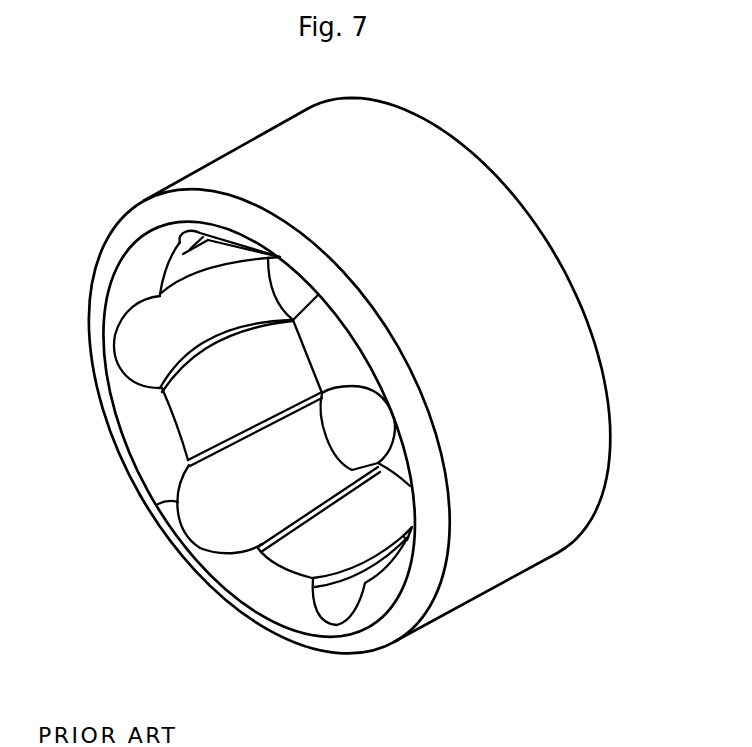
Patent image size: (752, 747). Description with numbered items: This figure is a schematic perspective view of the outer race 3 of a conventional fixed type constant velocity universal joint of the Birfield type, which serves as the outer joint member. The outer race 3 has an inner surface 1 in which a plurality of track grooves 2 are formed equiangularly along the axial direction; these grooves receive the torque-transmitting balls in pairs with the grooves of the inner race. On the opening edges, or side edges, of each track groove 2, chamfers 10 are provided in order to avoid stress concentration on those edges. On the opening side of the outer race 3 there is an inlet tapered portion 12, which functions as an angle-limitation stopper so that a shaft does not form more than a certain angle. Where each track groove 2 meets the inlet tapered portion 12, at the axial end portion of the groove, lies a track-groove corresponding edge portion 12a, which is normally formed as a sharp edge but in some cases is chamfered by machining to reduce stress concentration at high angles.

The inner surface 1 is at (187, 413).
The track grooves 2 is at (137, 345).
The outer race 3 is at (482, 196).
The chamfers 10 is at (211, 350).
The inlet tapered portion 12 is at (252, 591).
The track-groove corresponding edge portion 12a is at (160, 505).